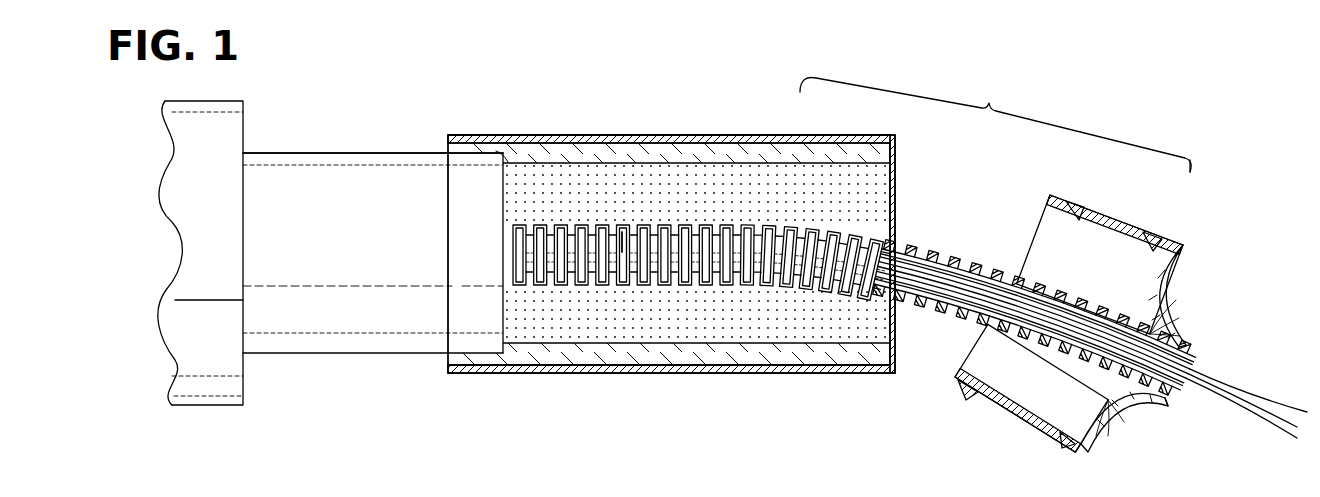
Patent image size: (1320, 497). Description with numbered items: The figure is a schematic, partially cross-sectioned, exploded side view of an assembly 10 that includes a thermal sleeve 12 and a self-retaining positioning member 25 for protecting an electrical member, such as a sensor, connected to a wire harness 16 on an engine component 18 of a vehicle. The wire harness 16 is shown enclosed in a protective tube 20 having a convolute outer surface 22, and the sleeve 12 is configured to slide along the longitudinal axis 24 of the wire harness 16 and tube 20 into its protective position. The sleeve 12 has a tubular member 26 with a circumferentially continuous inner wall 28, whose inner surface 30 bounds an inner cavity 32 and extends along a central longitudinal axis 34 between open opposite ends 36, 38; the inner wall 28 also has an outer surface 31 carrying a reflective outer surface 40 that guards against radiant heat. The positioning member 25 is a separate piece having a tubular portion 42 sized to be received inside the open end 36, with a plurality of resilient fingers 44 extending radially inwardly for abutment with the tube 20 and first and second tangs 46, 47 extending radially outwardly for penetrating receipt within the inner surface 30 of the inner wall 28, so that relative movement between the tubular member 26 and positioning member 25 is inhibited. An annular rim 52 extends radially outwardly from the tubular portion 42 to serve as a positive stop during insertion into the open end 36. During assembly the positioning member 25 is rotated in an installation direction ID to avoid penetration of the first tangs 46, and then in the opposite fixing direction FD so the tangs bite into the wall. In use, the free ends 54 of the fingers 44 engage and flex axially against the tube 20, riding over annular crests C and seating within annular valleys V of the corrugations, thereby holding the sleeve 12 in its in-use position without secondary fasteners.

The assembly 10 is at (1228, 134).
The thermal sleeve 12 is at (995, 125).
The wire harness 16 is at (1258, 400).
The engine component 18 is at (228, 101).
The tube 20 is at (921, 232).
The convolute outer surface 22 is at (803, 237).
The longitudinal axis 24 is at (622, 232).
The central longitudinal axis 34 is at (604, 150).
The self-retaining positioning member 25 is at (1204, 272).
The tubular member 26 is at (652, 130).
The inner wall 28 is at (705, 150).
The inner surface 30 is at (672, 373).
The outer surface 31 is at (718, 372).
The inner cavity 32 is at (781, 322).
The open end 36 is at (898, 146).
The open end 38 is at (447, 147).
The reflective outer surface 40 is at (868, 133).
The tubular portion 42 is at (1056, 462).
The resilient flange 44 is at (1173, 318).
The first tang 46 is at (1152, 240).
The second tang 47 is at (1082, 200).
The annular rim 52 is at (1184, 246).
The free end 54 is at (1156, 404).
The annular crest C is at (947, 258).
The annular valley V is at (987, 270).
The installation direction ID is at (286, 163).
The fixing direction FD is at (323, 180).